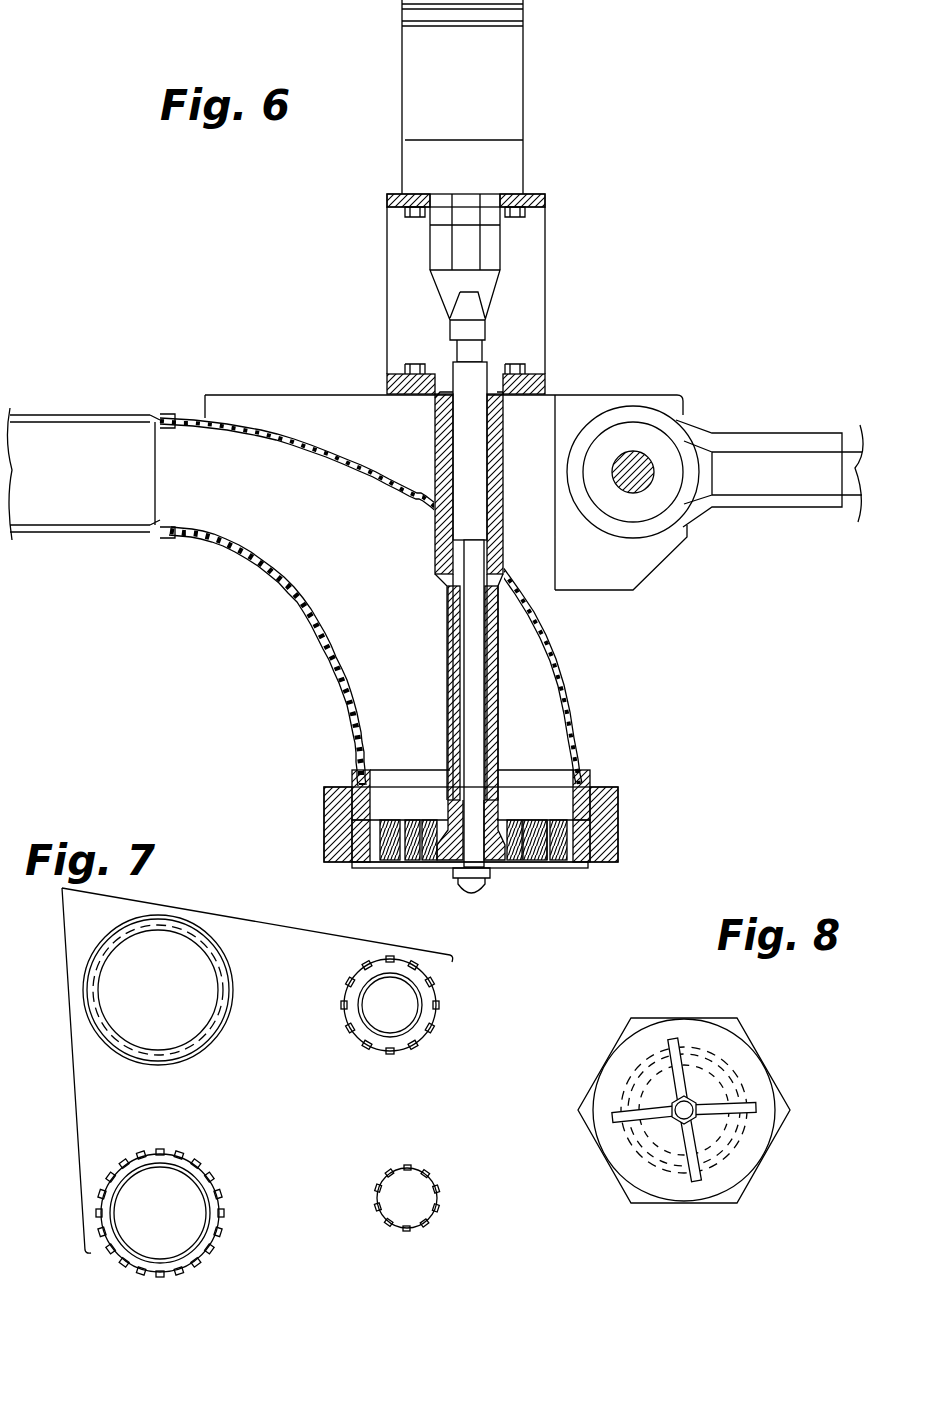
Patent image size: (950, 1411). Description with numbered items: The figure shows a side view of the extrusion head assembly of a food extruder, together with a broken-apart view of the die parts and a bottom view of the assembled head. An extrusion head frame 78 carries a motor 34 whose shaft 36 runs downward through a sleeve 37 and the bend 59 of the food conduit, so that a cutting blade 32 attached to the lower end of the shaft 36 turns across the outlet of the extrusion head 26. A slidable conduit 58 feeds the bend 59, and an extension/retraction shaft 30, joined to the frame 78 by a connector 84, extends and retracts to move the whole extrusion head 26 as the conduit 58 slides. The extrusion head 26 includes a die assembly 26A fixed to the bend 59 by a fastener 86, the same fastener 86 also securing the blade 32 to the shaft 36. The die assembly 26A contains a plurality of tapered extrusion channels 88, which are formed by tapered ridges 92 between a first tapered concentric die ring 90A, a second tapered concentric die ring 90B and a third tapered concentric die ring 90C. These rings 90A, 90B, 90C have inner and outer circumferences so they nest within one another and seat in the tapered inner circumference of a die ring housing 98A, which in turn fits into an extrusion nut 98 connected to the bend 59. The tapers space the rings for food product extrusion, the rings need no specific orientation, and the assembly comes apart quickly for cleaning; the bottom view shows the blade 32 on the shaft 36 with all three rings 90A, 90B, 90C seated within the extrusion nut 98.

In FIG. 6, the extrusion head 26 is at (640, 797).
In FIG. 8, the extrusion head 26 is at (764, 1022).
In FIG. 6, the die assembly 26A is at (367, 875).
In FIG. 8, the die assembly 26A is at (677, 1014).
In FIG. 6, the extension/retraction shaft 30 is at (855, 453).
In FIG. 6, the blade 32 is at (562, 866).
In FIG. 8, the blade 32 is at (733, 1110).
In FIG. 6, the motor 34 is at (505, 93).
In FIG. 6, the shaft 36 is at (463, 398).
In FIG. 8, the shaft 36 is at (688, 1100).
In FIG. 6, the sleeve 37 is at (485, 620).
In FIG. 6, the conduit 58 is at (102, 490).
In FIG. 6, the bend 59 is at (392, 575).
In FIG. 6, the extrusion head frame 78 is at (333, 407).
In FIG. 6, the connector 84 is at (632, 452).
In FIG. 6, the fastener 86 is at (485, 888).
In FIG. 6, the tapered extrusion channels 88 is at (547, 822).
In FIG. 6, the first tapered concentric die ring 90A is at (390, 866).
In FIG. 7, the first tapered concentric die ring 90A is at (207, 1272).
In FIG. 8, the first tapered concentric die ring 90A is at (680, 1165).
In FIG. 6, the second tapered concentric die ring 90B is at (412, 866).
In FIG. 7, the second tapered concentric die ring 90B is at (404, 1062).
In FIG. 8, the second tapered concentric die ring 90B is at (665, 1140).
In FIG. 6, the third tapered concentric die ring 90C is at (445, 870).
In FIG. 7, the third tapered concentric die ring 90C is at (406, 1238).
In FIG. 8, the third tapered concentric die ring 90C is at (657, 1127).
In FIG. 7, the tapered ridges 92 is at (223, 1200).
In FIG. 6, the extrusion nut 98 is at (592, 864).
In FIG. 8, the extrusion nut 98 is at (760, 1165).
In FIG. 7, the die ring housing 98A is at (128, 1062).
In FIG. 8, the die ring housing 98A is at (727, 1172).